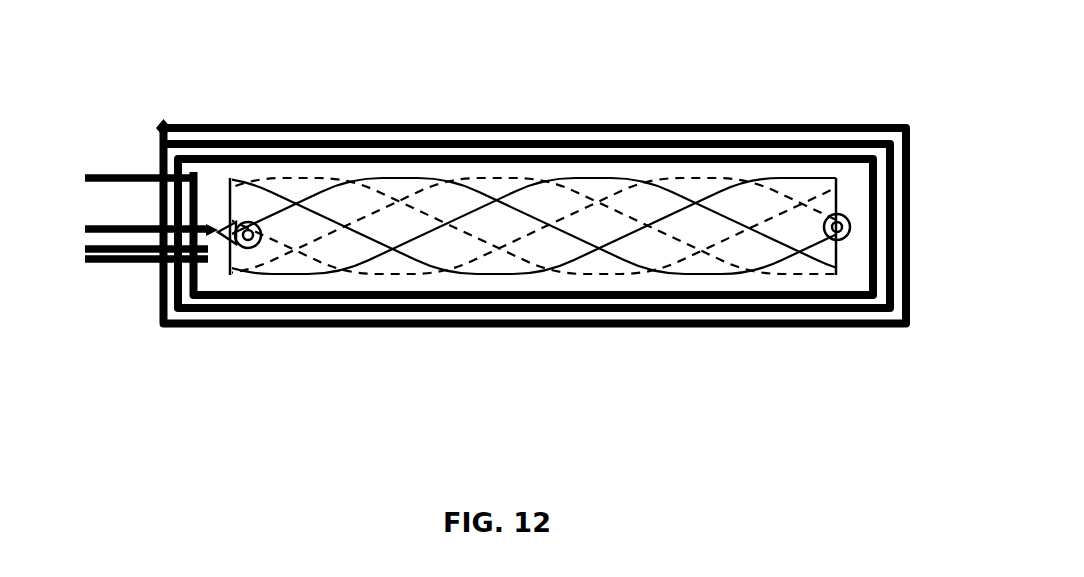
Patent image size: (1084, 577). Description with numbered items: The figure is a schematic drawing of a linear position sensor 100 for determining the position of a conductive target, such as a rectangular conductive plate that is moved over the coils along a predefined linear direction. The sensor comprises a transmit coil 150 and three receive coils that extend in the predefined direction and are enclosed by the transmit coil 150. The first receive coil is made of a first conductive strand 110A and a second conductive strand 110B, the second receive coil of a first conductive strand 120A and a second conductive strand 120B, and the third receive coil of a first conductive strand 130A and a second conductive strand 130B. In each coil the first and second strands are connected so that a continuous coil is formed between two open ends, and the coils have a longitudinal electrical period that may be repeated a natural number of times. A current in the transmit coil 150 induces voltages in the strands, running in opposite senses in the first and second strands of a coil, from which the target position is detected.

The position sensor 100 is at (202, 99).
The first conductive strand of the first receive coil 110A is at (797, 175).
The second conductive strand of the first receive coil 110B is at (495, 175).
The first conductive strand of the second receive coil 120A is at (701, 175).
The second conductive strand of the second receive coil 120B is at (397, 175).
The first conductive strand of the third receive coil 130A is at (601, 175).
The second conductive strand of the third receive coil 130B is at (289, 176).
The transmit coil 150 is at (190, 314).